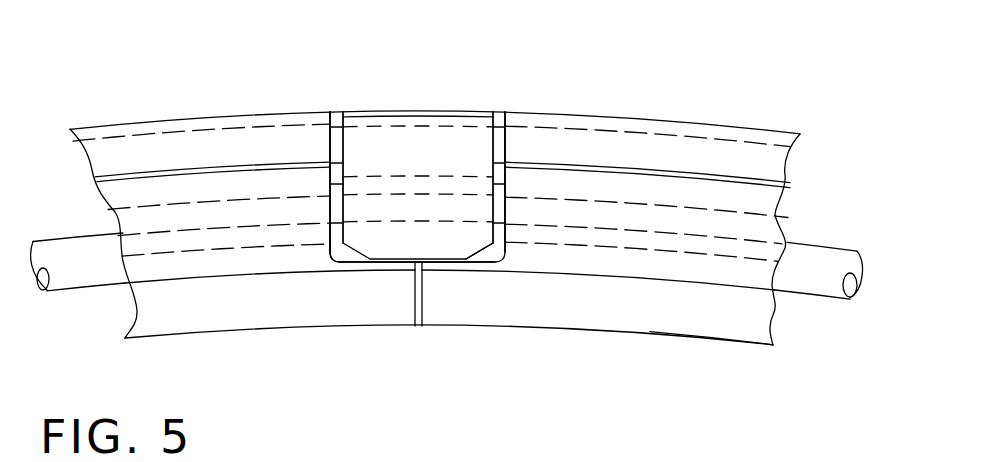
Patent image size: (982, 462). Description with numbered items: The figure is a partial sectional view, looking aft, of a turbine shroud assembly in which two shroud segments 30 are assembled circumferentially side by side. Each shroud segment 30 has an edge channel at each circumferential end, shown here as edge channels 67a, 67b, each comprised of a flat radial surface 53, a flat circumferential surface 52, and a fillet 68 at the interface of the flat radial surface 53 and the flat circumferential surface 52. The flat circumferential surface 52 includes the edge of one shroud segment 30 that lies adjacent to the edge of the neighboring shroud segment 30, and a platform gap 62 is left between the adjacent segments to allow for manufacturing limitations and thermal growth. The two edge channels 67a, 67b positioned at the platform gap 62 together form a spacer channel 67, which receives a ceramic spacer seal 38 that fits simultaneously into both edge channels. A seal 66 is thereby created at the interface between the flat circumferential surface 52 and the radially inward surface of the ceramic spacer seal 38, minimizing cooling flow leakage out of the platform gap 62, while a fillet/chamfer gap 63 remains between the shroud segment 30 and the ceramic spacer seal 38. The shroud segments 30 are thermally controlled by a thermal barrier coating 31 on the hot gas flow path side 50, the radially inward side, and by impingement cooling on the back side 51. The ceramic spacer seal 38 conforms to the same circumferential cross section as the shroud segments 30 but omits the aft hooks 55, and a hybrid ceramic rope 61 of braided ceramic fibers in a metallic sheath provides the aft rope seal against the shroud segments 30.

The shroud segment 30 is at (170, 143).
The thermal barrier coating 31 is at (708, 338).
The ceramic spacer seal 38 is at (420, 165).
The hot gas flow path side 50 is at (598, 331).
The back side 51 is at (566, 112).
The flat circumferential surface 52 is at (354, 262).
The flat radial surface 53 is at (333, 156).
The aft hook 55 is at (625, 155).
The hybrid ceramic rope 61 is at (807, 243).
The platform gap 62 is at (415, 326).
The fillet/chamfer gap 63 is at (343, 268).
The seal 66 is at (443, 259).
The spacer channel 67 is at (390, 110).
The edge channel 67a is at (337, 122).
The edge channel 67b is at (503, 127).
The fillet 68 is at (343, 259).